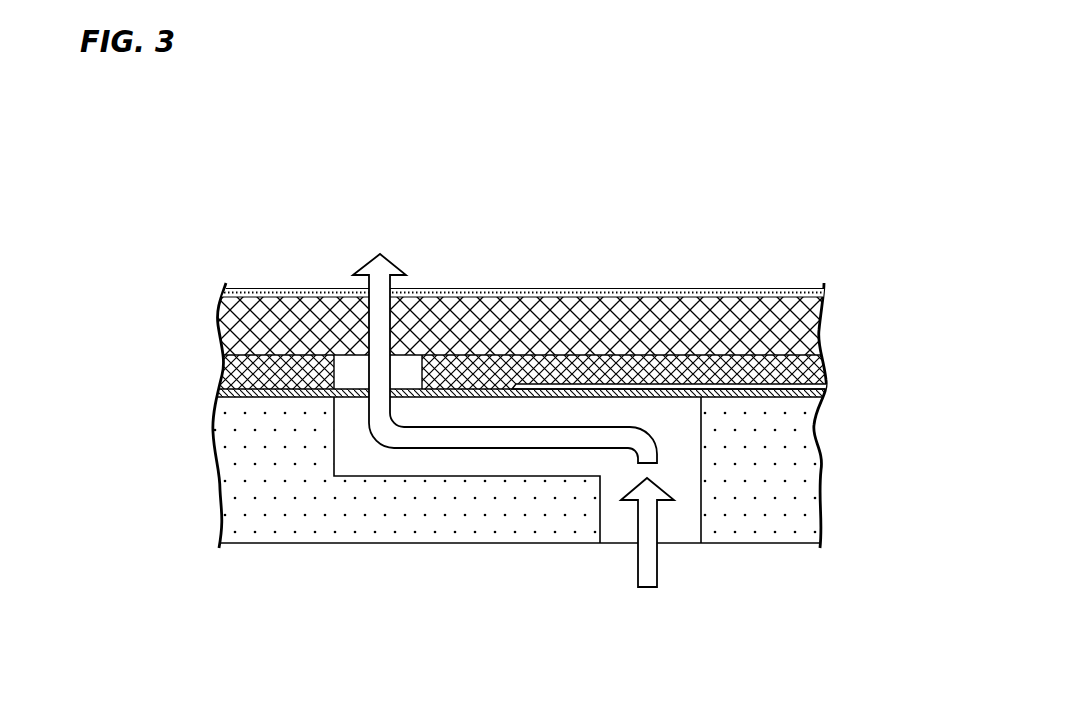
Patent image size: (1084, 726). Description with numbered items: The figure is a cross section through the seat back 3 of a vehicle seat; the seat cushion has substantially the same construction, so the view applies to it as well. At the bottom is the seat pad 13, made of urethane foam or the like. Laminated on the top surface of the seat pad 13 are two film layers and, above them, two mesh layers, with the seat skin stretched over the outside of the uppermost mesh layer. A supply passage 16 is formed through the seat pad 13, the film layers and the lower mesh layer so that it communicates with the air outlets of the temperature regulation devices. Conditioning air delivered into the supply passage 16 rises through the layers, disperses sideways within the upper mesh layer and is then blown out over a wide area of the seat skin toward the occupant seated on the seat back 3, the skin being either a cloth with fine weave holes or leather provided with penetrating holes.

The seat back 3 is at (574, 332).
The supply passage 16 is at (426, 468).
The seat pad 13 is at (755, 505).